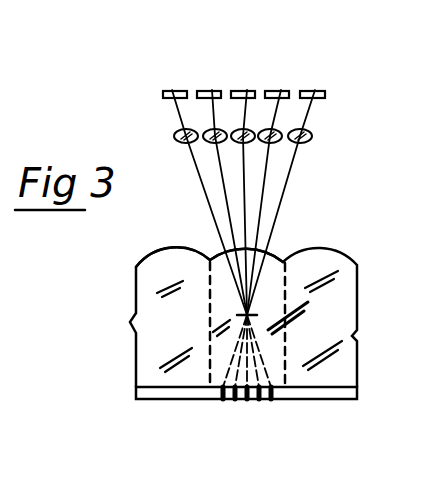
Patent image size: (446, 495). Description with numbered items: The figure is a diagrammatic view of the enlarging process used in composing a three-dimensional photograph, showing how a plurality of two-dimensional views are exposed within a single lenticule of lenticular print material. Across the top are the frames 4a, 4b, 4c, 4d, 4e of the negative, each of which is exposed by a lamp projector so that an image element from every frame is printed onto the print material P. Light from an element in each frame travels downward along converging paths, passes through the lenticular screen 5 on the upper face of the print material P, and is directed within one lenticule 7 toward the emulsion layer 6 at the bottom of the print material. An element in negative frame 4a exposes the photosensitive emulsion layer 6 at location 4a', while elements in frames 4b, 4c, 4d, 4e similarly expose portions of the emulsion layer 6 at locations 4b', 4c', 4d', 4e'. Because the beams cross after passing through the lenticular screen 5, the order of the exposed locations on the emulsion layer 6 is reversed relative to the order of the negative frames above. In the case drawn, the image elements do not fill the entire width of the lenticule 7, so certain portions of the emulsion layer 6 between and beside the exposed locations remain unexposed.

The print material P is at (150, 293).
The lenticular screen 5 is at (185, 260).
The lenticule 7 is at (265, 262).
The emulsion layer 6 is at (146, 391).
The negative frame 4a is at (298, 179).
The negative frame 4b is at (277, 179).
The negative frame 4c is at (249, 179).
The negative frame 4d is at (222, 179).
The negative frame 4e is at (201, 179).
The exposure location 4a' is at (207, 398).
The exposure location 4b' is at (225, 398).
The exposure location 4c' is at (255, 398).
The exposure location 4d' is at (278, 398).
The exposure location 4e' is at (296, 398).